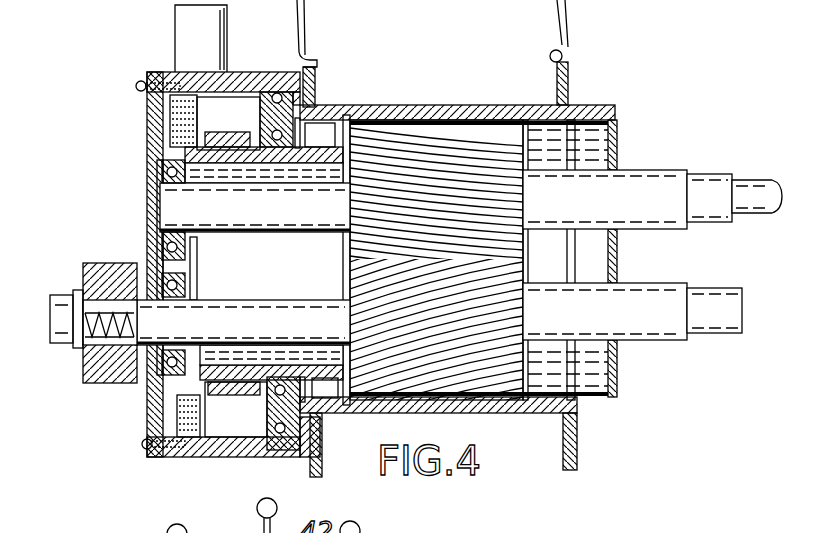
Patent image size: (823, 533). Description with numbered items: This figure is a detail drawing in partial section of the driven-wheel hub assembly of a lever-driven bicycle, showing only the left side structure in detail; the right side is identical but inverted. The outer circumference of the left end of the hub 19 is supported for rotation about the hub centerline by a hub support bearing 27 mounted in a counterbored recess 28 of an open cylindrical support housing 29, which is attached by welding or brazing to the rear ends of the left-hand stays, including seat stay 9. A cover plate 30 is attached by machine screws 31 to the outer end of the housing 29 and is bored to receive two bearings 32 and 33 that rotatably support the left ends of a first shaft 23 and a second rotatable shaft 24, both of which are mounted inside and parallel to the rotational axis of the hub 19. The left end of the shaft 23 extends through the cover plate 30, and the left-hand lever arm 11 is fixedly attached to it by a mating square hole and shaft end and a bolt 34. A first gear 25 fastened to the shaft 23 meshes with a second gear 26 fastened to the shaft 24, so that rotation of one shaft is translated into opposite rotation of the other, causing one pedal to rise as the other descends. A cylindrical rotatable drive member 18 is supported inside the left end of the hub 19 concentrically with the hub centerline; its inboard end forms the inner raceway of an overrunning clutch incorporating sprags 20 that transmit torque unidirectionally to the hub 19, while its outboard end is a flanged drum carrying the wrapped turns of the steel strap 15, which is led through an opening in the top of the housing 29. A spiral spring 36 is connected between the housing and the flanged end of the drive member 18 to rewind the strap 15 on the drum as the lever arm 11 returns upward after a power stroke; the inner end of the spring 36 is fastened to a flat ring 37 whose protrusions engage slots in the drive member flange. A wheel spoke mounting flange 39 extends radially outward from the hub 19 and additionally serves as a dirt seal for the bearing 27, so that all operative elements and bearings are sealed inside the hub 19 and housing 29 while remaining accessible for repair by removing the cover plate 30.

The seat stay 9 is at (178, 28).
The left-hand lever arm 11 is at (110, 374).
The steel strap 15 is at (215, 118).
The rotatable drive member 18 is at (162, 198).
The hub 19 is at (480, 91).
The sprags 20 is at (386, 115).
The first shaft 23 is at (292, 278).
The second rotatable shaft 24 is at (219, 245).
The first gear 25 is at (497, 365).
The second gear 26 is at (430, 153).
The hub support bearing 27 is at (300, 103).
The counterbored recess 28 is at (270, 83).
The support housing 29 is at (236, 72).
The cover plate 30 is at (146, 119).
The machine screws 31 is at (136, 86).
The bearing 32 is at (153, 381).
The bearing 33 is at (162, 247).
The bolt 34 is at (63, 350).
The spiral spring 36 is at (232, 267).
The flat ring 37 is at (187, 140).
The wheel spoke mounting flange 39 is at (312, 88).